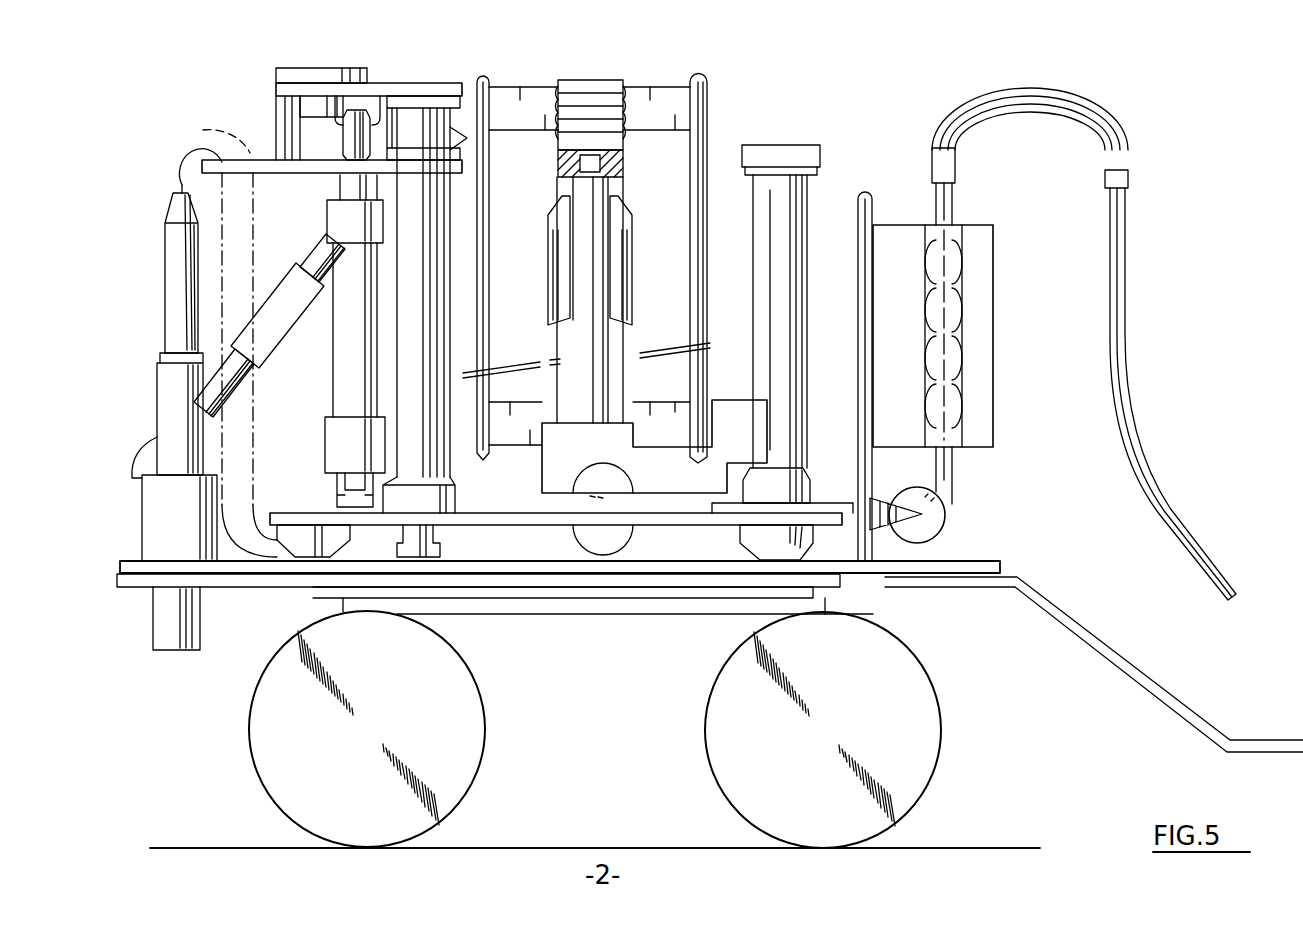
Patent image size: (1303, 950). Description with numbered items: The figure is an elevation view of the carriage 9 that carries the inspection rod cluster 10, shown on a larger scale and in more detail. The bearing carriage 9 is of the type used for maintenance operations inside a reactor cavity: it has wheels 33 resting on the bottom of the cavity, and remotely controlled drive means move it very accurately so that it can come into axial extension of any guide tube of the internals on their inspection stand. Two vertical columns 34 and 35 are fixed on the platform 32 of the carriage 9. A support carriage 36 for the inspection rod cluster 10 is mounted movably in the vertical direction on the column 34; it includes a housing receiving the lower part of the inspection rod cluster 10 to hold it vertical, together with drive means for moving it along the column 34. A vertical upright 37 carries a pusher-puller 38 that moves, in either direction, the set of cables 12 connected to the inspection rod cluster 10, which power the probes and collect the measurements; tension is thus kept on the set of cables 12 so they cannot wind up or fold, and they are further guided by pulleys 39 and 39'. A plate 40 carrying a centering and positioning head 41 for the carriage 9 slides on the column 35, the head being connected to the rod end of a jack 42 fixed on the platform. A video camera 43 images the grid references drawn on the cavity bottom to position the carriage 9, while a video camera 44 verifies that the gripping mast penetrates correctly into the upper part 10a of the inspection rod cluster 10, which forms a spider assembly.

The carriage 9 is at (1145, 235).
The inspection rod cluster 10 is at (727, 113).
The upper part of the inspection rod cluster 10a is at (600, 90).
The set of cables 12 is at (1138, 448).
The platform 32 is at (857, 568).
The wheels 33 is at (465, 722).
The column 34 is at (770, 212).
The column 35 is at (415, 217).
The support carriage 36 is at (626, 477).
The vertical upright 37 is at (868, 200).
The pusher-puller 38 is at (980, 344).
The pulley 39 is at (956, 517).
The pulley 39' is at (561, 531).
The plate 40 is at (267, 163).
The centering and positioning head 41 is at (372, 60).
The jack 42 is at (345, 378).
The video camera 43 is at (168, 395).
The video camera 44 is at (276, 310).